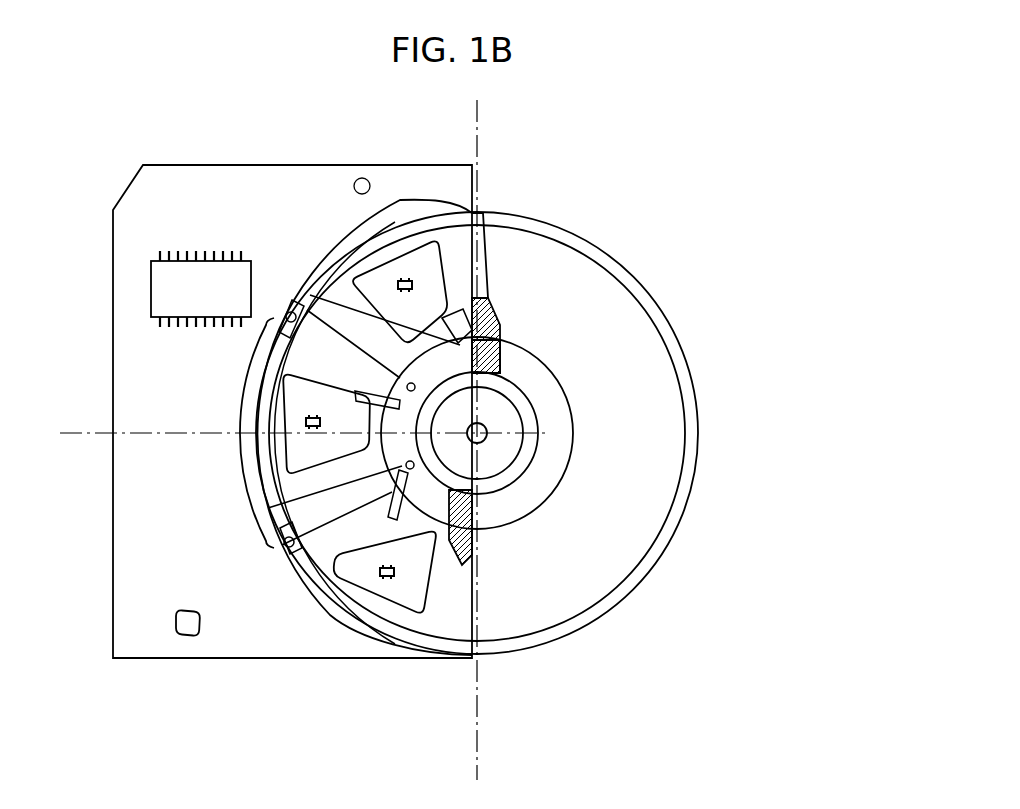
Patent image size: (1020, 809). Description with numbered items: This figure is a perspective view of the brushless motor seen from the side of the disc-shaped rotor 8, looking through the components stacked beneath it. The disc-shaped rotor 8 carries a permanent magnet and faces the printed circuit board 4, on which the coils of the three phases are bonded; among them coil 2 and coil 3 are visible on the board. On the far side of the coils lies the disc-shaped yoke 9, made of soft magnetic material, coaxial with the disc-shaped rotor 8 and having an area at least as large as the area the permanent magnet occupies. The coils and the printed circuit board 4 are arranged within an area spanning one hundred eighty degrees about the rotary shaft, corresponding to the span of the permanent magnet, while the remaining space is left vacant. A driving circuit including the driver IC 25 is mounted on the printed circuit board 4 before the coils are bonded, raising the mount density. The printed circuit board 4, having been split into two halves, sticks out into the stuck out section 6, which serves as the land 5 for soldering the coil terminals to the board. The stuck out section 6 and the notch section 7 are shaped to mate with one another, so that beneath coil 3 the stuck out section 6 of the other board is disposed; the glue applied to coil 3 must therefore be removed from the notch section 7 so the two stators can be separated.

The coil 2 is at (240, 393).
The coil 3 is at (345, 620).
The printed circuit board 4 is at (282, 243).
The land 5 is at (498, 350).
The stuck out section 6 is at (483, 343).
The notch section 7 is at (472, 545).
The disc-shaped rotor 8 is at (655, 312).
The disc-shaped yoke 9 is at (651, 403).
The driver IC 25 is at (198, 293).